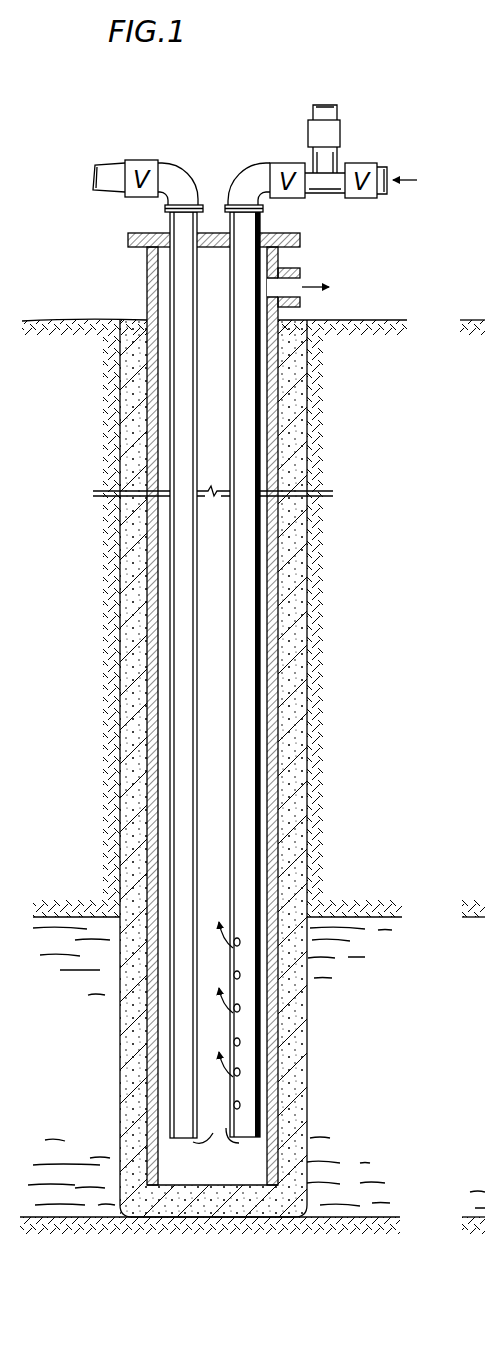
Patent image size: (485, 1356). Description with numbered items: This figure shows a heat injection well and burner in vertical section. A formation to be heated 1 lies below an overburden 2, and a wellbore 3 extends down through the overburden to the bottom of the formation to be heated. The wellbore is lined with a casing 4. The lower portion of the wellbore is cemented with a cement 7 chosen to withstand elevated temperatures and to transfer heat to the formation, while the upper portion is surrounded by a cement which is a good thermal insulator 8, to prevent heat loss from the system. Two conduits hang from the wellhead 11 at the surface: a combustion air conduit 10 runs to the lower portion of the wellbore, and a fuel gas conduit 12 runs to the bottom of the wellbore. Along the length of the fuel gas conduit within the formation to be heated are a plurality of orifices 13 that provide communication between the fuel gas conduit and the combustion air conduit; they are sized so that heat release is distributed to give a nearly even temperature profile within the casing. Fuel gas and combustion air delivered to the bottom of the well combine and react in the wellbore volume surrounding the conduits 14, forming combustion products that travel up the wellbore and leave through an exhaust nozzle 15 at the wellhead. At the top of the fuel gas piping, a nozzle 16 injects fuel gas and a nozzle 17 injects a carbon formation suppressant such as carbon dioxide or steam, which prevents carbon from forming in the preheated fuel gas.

The formation to be heated 1 is at (70, 1092).
The overburden 2 is at (88, 653).
The wellbore 3 is at (212, 536).
The casing 4 is at (281, 410).
The cement 7 is at (136, 1008).
The thermally insulating cement 8 is at (132, 825).
The combustion air conduit 10 is at (179, 632).
The wellhead 11 is at (146, 282).
The fuel gas conduit 12 is at (264, 462).
The orifices 13 is at (238, 1072).
The wellbore volume surrounding the conduits 14 is at (219, 896).
The exhaust nozzle 15 is at (308, 278).
The fuel gas injection nozzle 16 is at (327, 103).
The carbon formation suppressant injection nozzle 17 is at (402, 175).